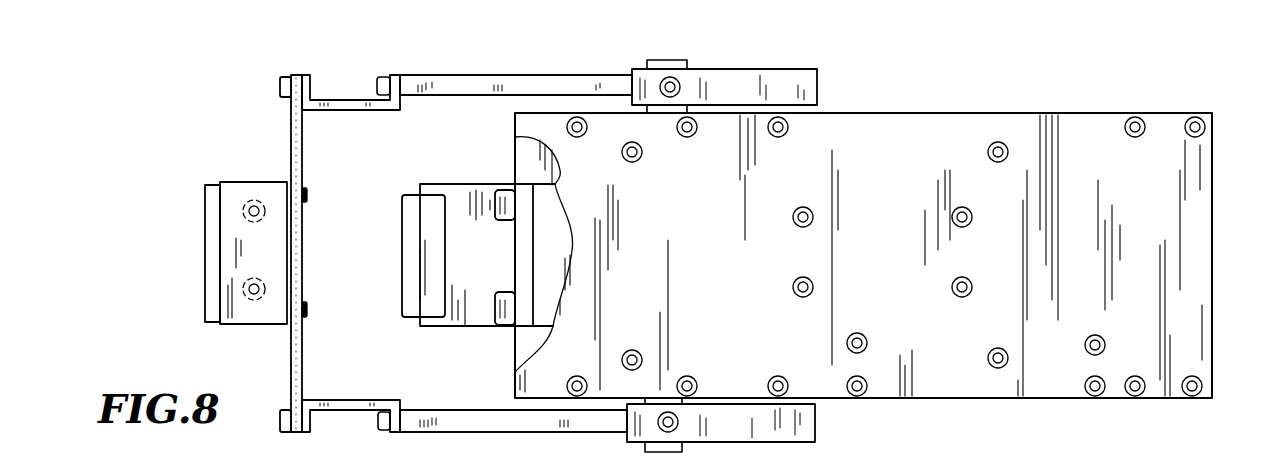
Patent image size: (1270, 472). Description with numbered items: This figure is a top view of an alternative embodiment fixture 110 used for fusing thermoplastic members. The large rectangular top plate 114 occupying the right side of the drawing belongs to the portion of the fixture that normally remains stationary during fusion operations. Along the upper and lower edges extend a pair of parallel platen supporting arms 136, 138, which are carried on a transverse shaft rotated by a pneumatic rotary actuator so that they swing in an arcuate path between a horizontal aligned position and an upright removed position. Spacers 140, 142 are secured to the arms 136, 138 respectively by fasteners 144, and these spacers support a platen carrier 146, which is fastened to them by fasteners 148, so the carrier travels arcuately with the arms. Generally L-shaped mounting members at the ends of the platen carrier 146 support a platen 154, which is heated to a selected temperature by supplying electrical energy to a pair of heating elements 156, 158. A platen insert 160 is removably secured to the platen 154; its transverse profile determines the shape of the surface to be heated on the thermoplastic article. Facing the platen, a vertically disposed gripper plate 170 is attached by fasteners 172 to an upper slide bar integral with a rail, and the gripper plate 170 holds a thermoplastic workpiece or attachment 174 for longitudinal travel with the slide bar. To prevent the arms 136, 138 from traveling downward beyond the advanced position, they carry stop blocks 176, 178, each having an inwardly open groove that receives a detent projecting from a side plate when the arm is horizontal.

The fixture 110 is at (240, 119).
The top plate 114 is at (1190, 258).
The platen supporting arm 136 is at (507, 432).
The platen supporting arm 138 is at (538, 92).
The spacer 140 is at (364, 400).
The spacer 142 is at (348, 106).
The fasteners 144 is at (381, 432).
The platen carrier 146 is at (304, 350).
The fasteners 148 is at (285, 90).
The platen 154 is at (232, 212).
The heating element 156 is at (254, 200).
The heating element 158 is at (254, 300).
The platen insert 160 is at (216, 286).
The gripper plate 170 is at (533, 250).
The fasteners 172 is at (500, 328).
The workpiece 174 is at (415, 250).
The stop block 176 is at (815, 428).
The stop block 178 is at (805, 80).